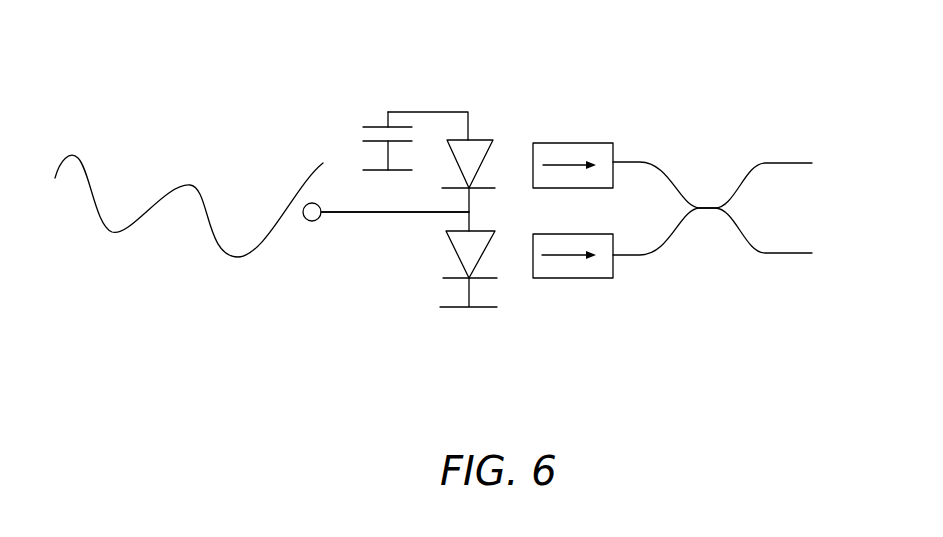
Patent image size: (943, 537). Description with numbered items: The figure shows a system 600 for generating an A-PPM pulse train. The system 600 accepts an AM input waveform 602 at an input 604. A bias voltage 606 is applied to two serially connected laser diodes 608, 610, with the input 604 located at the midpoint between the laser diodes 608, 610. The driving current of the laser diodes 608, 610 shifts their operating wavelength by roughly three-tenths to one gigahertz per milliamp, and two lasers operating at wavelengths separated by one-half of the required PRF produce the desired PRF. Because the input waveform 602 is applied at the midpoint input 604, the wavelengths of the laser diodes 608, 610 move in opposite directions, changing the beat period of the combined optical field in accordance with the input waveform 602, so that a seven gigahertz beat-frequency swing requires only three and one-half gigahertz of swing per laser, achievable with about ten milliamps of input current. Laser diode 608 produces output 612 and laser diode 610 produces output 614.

The system 600 is at (505, 54).
The input waveform 602 is at (105, 232).
The input 604 is at (361, 212).
The bias voltage 606 is at (347, 131).
The laser diode 608 is at (488, 157).
The laser diode 610 is at (447, 251).
The output 612 is at (592, 143).
The output 614 is at (573, 278).